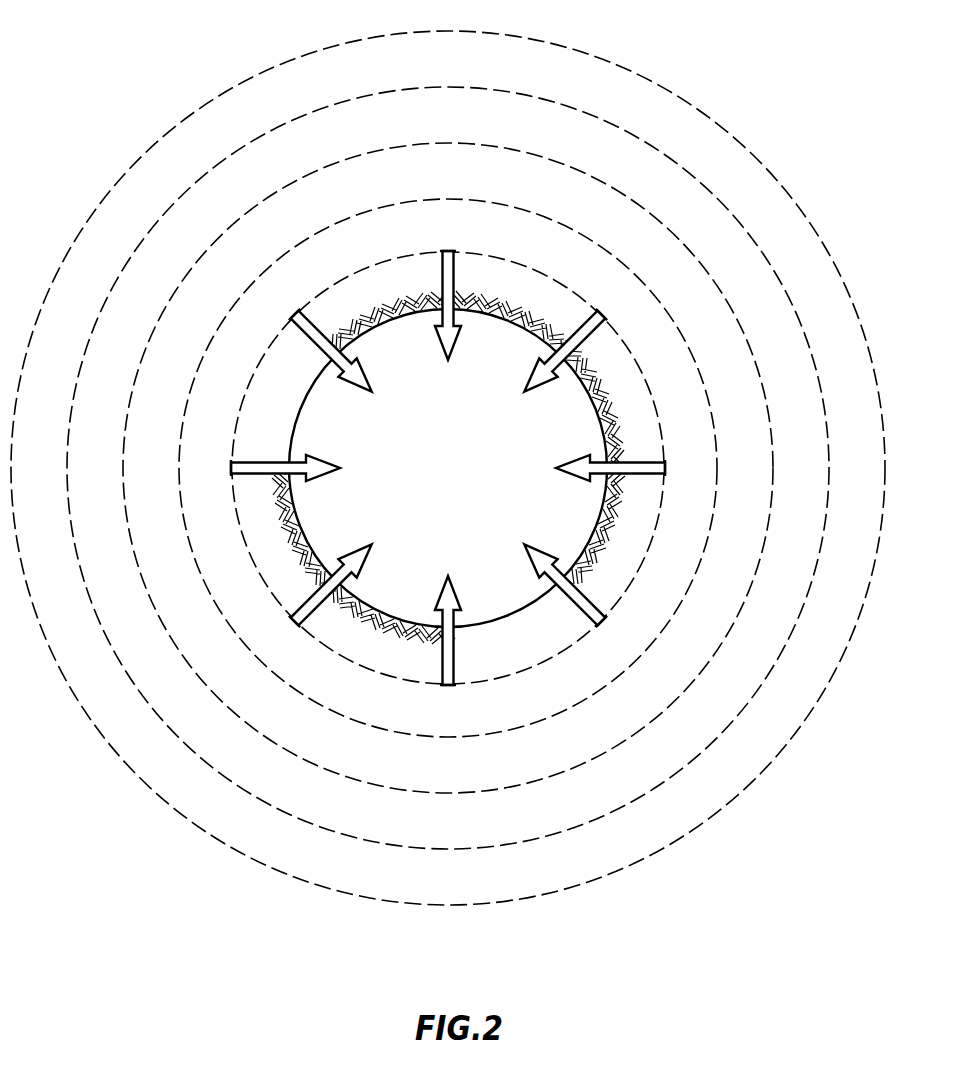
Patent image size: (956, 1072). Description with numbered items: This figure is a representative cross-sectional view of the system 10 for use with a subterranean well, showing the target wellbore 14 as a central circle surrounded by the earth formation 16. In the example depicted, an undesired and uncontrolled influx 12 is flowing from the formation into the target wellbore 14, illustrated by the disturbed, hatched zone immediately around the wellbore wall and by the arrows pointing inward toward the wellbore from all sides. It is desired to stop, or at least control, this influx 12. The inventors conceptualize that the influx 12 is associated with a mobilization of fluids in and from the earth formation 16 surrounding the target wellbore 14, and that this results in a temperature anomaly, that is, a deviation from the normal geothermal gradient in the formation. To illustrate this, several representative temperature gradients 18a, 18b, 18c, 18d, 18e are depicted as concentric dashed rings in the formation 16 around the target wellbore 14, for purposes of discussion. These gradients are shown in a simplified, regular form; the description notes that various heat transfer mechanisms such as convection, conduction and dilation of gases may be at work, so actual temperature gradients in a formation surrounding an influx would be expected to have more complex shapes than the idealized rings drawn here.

The system 10 is at (755, 122).
The influx 12 is at (343, 365).
The target wellbore 14 is at (302, 530).
The earth formation 16 is at (133, 800).
The temperature gradient 18a is at (485, 682).
The temperature gradient 18b is at (525, 727).
The temperature gradient 18c is at (533, 783).
The temperature gradient 18d is at (527, 840).
The temperature gradient 18e is at (558, 893).